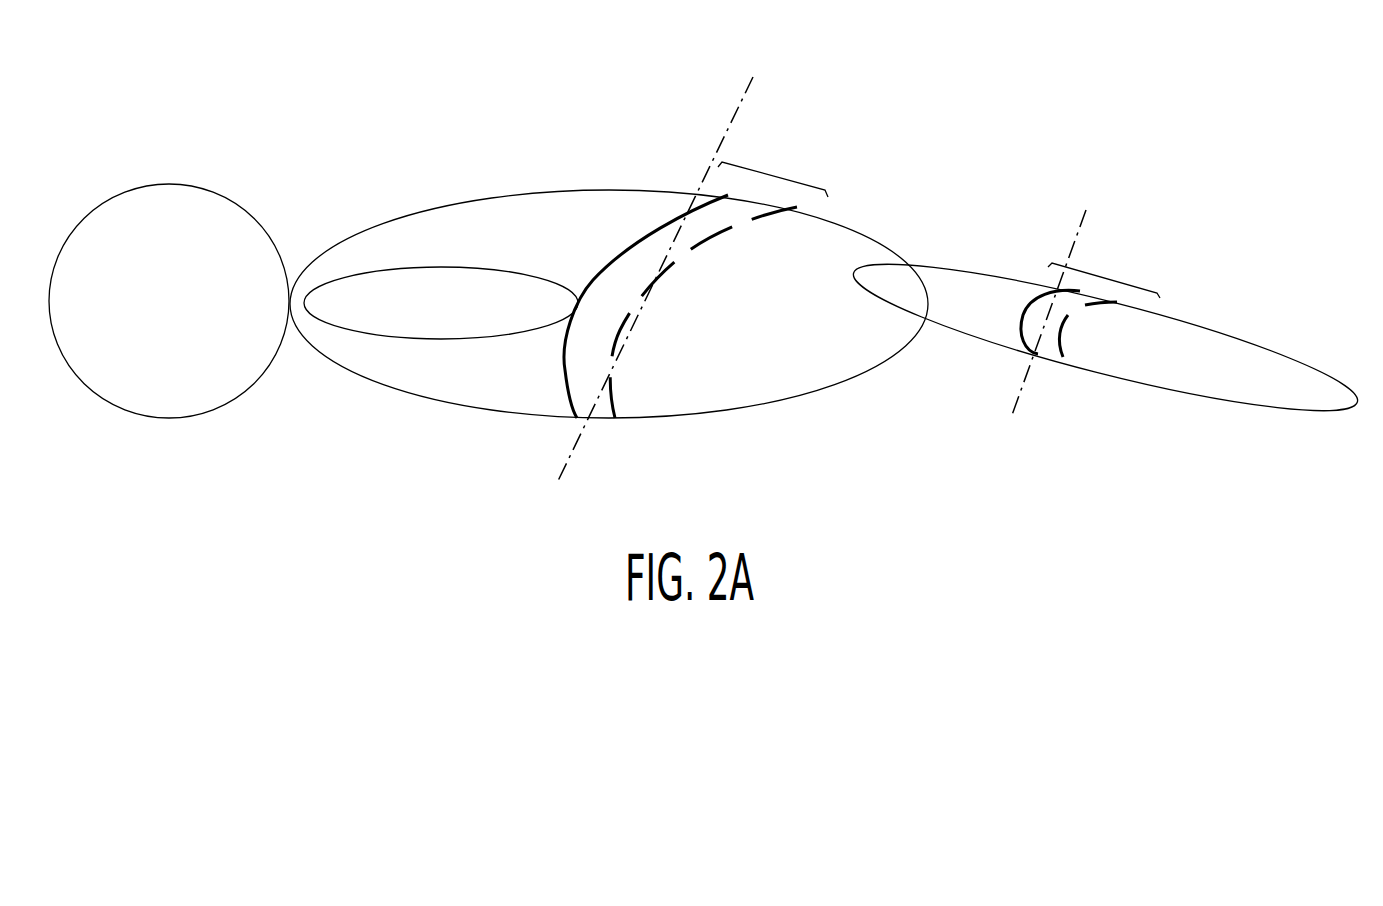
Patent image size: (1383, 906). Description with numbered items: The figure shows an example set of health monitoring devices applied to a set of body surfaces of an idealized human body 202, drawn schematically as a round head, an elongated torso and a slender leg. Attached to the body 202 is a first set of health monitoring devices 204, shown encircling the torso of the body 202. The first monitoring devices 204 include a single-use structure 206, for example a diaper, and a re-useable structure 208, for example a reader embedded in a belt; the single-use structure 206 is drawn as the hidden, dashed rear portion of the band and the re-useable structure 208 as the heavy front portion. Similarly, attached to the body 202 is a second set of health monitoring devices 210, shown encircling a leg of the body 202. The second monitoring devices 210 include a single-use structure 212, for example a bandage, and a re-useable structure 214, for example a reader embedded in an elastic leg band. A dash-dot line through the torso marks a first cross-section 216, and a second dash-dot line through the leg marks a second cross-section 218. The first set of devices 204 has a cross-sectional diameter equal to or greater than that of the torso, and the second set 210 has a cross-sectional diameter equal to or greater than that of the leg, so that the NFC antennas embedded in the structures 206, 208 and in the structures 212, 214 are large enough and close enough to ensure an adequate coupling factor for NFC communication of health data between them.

The idealized human body 202 is at (447, 207).
The first set of health monitoring devices 204 is at (773, 175).
The single-use structure 206 is at (715, 233).
The re-useable structure 208 is at (643, 233).
The second set of health monitoring devices 210 is at (1105, 273).
The single-use structure 212 is at (1070, 325).
The re-useable structure 214 is at (1023, 300).
The first cross-section 216 is at (742, 98).
The second cross-section 218 is at (1085, 218).